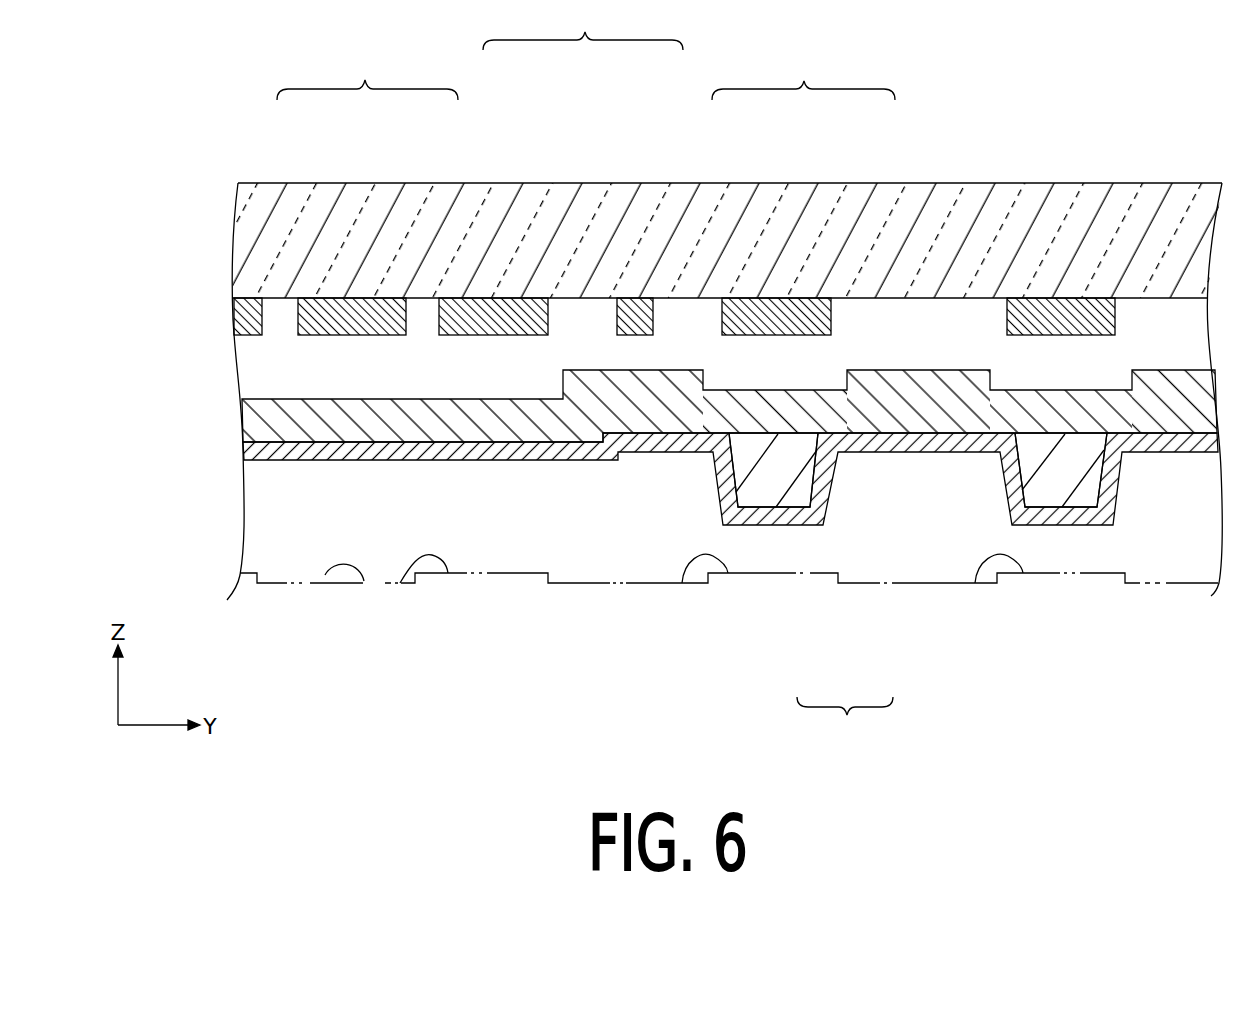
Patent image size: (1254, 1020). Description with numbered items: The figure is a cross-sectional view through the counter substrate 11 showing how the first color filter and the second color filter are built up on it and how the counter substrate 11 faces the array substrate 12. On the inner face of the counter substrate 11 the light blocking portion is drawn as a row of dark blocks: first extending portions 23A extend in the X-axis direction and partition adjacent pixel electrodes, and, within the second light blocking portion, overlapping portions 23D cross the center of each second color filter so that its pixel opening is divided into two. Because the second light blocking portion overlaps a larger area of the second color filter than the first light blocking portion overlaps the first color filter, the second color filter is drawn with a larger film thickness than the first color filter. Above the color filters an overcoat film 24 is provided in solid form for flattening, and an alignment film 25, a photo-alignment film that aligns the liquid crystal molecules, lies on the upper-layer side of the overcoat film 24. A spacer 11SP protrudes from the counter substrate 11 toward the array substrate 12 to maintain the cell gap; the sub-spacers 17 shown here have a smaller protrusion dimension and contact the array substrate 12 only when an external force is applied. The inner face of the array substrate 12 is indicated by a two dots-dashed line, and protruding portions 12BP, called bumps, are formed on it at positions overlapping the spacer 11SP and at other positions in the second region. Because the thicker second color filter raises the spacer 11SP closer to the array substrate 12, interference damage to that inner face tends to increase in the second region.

The counter substrate 11 is at (265, 207).
The array substrate 12 is at (325, 575).
The protruding portion 12BP is at (400, 583).
The sub-spacer 17 is at (773, 482).
The spacer 11SP is at (845, 723).
The first extending portion 23A is at (252, 305).
The overlapping portion 23D is at (353, 305).
The overcoat film 24 is at (1155, 417).
The alignment film 25 is at (1187, 440).